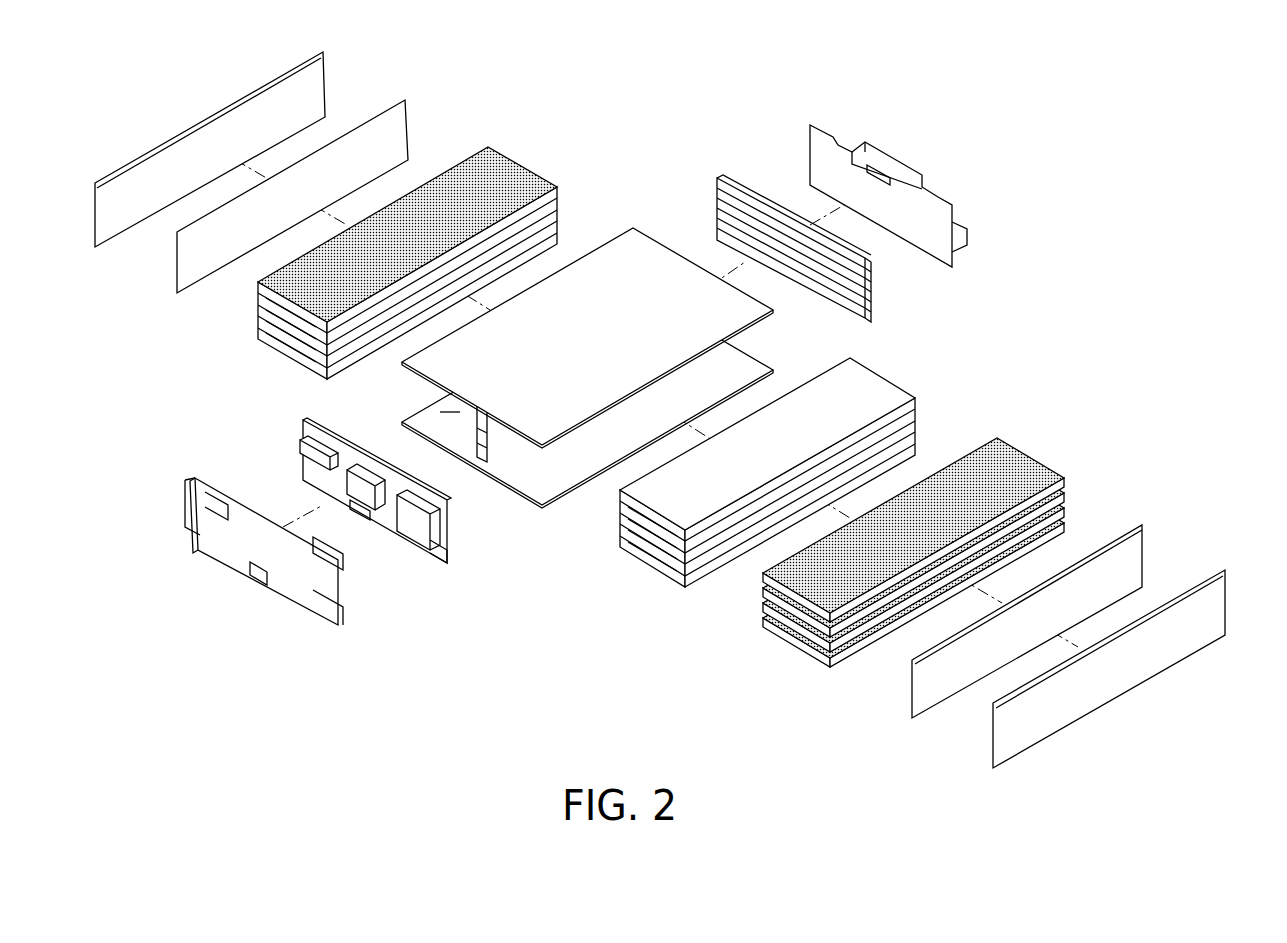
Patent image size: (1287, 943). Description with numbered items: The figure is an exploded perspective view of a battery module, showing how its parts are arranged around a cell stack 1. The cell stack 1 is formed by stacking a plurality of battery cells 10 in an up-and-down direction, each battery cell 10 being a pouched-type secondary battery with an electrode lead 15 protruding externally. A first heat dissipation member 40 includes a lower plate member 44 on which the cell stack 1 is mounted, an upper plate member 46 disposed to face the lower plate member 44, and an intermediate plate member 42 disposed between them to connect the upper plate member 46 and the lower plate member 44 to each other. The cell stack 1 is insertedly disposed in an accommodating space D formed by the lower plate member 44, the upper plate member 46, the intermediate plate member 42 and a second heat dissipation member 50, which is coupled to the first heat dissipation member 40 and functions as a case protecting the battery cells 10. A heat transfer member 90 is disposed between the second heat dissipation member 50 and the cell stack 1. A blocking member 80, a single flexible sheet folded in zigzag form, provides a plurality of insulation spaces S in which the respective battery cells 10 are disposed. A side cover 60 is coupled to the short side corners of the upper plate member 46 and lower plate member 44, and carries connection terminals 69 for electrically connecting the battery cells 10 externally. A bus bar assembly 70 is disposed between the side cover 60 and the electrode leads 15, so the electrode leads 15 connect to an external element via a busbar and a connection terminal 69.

The cell stack 1 is at (530, 155).
The battery cell 10 is at (758, 465).
The electrode lead 15 is at (634, 556).
The first heat dissipation member 40 is at (587, 382).
The intermediate plate member 42 is at (497, 430).
The lower plate member 44 is at (548, 476).
The upper plate member 46 is at (620, 270).
The second heat dissipation member 50 is at (317, 92).
The side cover 60 is at (292, 590).
The connection terminal 69 is at (397, 490).
The bus bar assembly 70 is at (336, 525).
The blocking member 80 is at (913, 543).
The heat transfer member 90 is at (400, 130).
The accommodating space D is at (452, 411).
The insulation space S is at (792, 645).